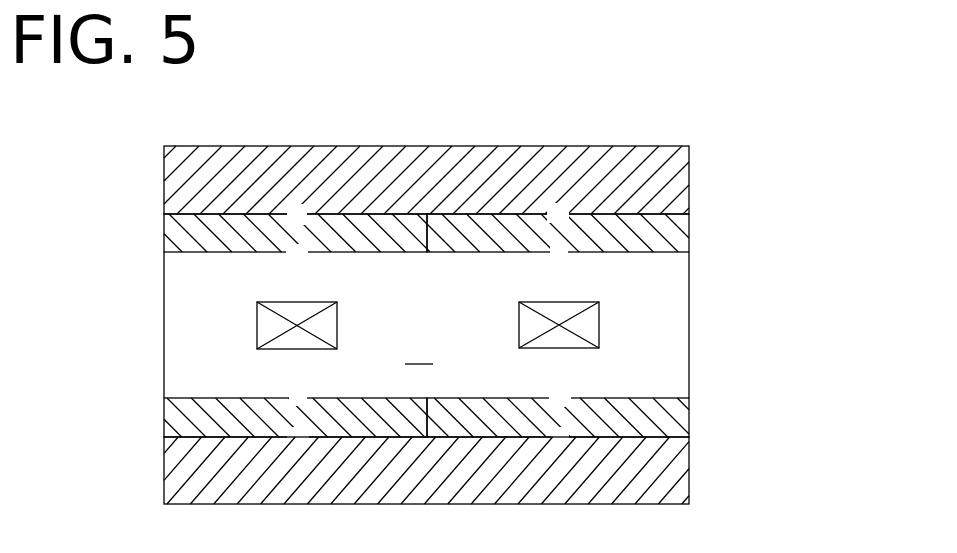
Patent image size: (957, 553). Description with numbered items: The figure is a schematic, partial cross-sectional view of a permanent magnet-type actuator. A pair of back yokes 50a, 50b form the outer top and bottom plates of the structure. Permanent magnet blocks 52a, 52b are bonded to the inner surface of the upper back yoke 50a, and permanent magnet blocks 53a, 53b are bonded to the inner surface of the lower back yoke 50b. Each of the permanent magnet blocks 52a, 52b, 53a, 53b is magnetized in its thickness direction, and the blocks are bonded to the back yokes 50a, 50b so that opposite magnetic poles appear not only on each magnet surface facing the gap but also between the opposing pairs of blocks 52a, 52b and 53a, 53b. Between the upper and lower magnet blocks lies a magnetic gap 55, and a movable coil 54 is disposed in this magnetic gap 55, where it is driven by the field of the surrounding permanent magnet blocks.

The back yoke 50a is at (678, 184).
The back yoke 50b is at (680, 471).
The permanent magnet block 52a is at (173, 233).
The permanent magnet block 52b is at (680, 232).
The permanent magnet block 53a is at (172, 420).
The permanent magnet block 53b is at (680, 418).
The movable coil 54 is at (519, 306).
The magnetic gap 55 is at (419, 352).